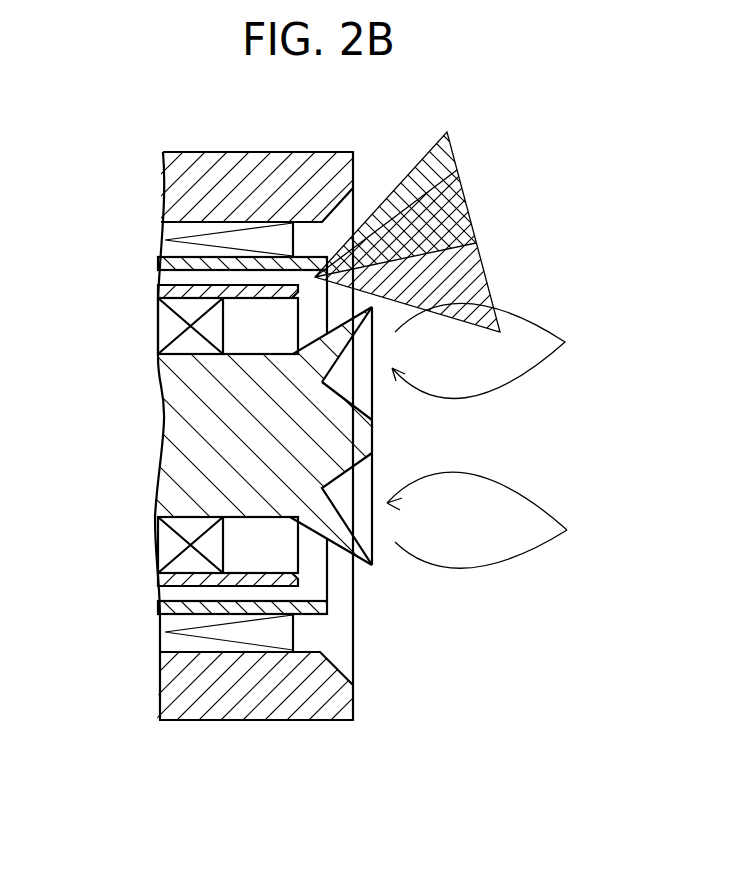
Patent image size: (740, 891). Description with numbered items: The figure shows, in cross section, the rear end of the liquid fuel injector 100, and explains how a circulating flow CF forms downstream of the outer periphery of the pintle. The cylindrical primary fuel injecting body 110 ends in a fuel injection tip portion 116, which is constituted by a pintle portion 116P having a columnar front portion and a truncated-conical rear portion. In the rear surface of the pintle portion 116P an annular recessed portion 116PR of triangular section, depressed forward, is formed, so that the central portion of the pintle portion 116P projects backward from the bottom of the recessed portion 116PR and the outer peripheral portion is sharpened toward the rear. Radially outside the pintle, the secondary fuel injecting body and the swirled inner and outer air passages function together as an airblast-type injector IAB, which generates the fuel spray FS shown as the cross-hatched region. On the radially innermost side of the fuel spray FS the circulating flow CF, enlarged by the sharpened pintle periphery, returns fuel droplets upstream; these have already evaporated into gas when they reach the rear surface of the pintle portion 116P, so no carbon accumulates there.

The liquid fuel injector 100 is at (489, 667).
The primary fuel injecting body 110 is at (192, 476).
The fuel injection tip portion 116 is at (370, 471).
The pintle portion 116P is at (313, 517).
The recessed portion 116PR is at (384, 389).
The airblast-type injector IAB is at (152, 220).
The fuel spray FS is at (489, 210).
The circulating flow CF is at (495, 435).